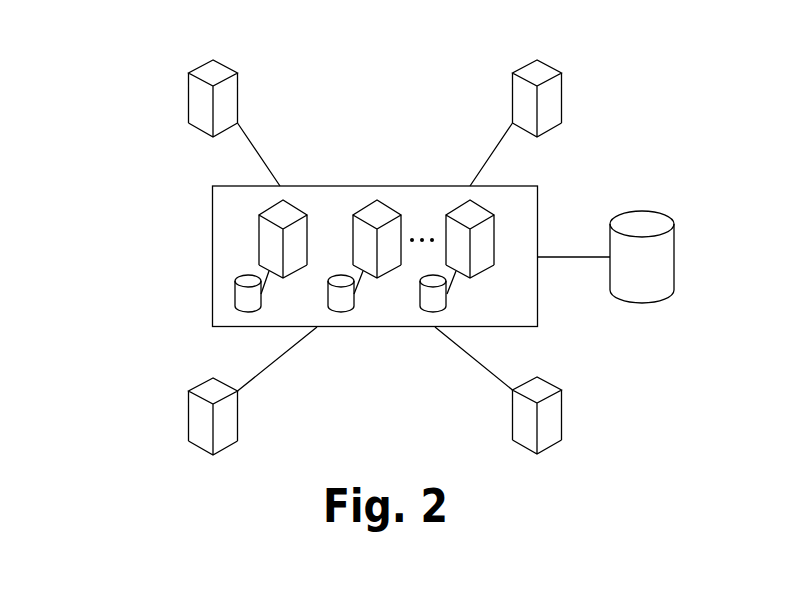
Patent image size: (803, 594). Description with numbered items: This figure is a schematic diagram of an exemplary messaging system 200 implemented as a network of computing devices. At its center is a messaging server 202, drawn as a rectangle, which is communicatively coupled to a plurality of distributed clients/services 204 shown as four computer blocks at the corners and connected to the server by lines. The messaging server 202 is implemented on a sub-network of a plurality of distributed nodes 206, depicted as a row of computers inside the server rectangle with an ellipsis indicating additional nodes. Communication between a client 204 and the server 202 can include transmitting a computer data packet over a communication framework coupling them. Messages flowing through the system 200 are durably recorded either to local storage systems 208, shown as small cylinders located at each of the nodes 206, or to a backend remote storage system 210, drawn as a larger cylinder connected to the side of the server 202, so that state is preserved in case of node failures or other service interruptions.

The messaging system 200 is at (139, 128).
The messaging server 202 is at (198, 252).
The distributed clients/services 204 is at (255, 90).
The distributed nodes 206 is at (313, 208).
The local storage systems 208 is at (220, 314).
The backend remote storage system 210 is at (660, 270).